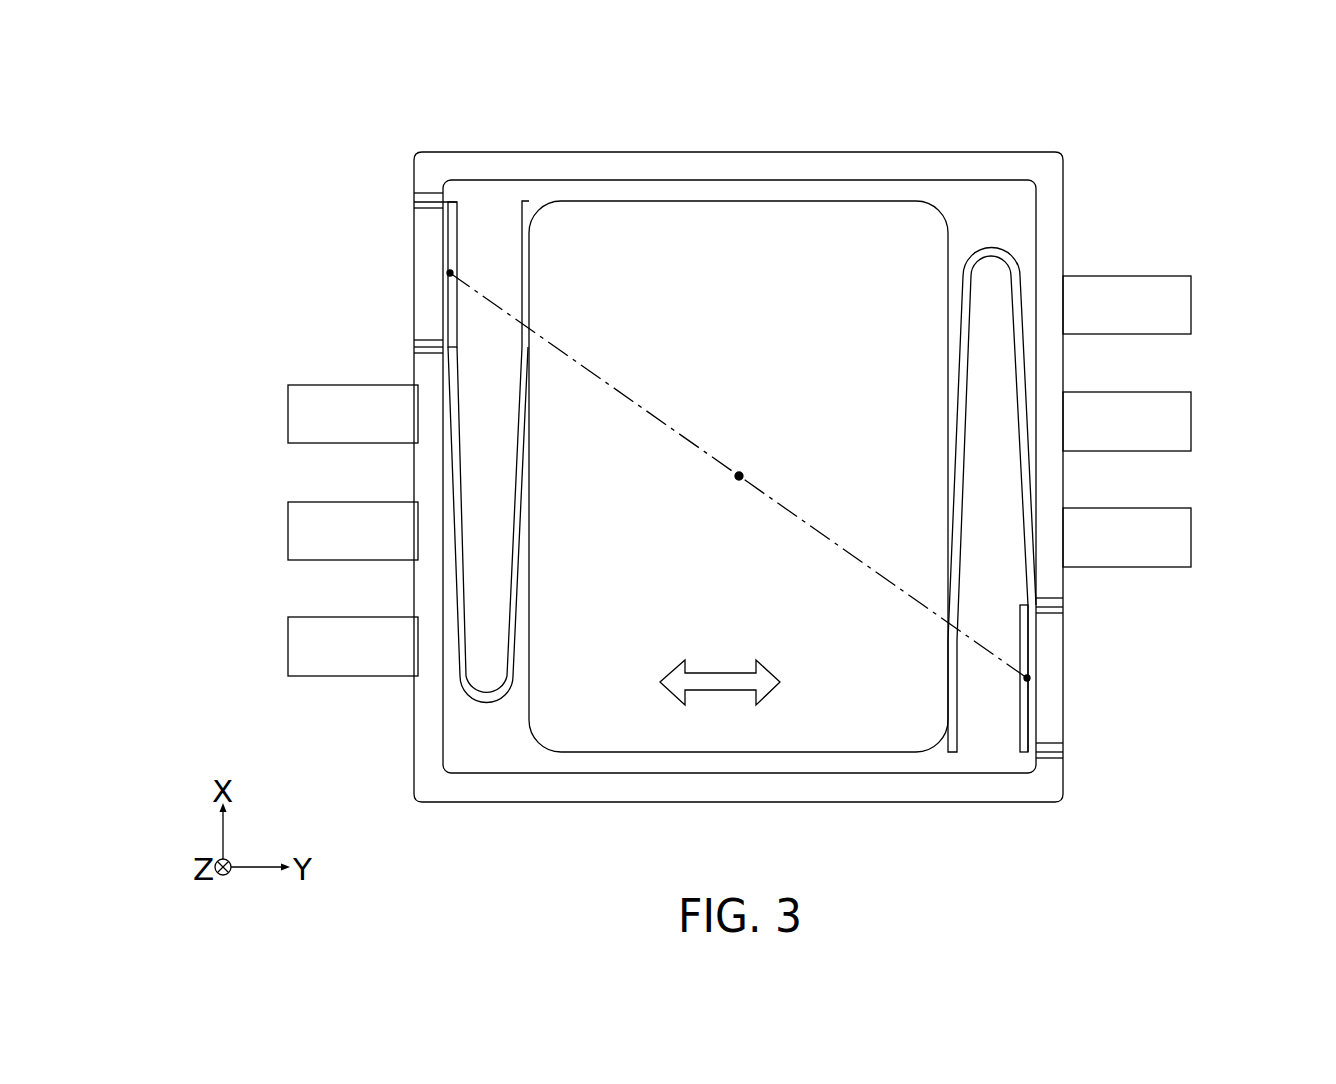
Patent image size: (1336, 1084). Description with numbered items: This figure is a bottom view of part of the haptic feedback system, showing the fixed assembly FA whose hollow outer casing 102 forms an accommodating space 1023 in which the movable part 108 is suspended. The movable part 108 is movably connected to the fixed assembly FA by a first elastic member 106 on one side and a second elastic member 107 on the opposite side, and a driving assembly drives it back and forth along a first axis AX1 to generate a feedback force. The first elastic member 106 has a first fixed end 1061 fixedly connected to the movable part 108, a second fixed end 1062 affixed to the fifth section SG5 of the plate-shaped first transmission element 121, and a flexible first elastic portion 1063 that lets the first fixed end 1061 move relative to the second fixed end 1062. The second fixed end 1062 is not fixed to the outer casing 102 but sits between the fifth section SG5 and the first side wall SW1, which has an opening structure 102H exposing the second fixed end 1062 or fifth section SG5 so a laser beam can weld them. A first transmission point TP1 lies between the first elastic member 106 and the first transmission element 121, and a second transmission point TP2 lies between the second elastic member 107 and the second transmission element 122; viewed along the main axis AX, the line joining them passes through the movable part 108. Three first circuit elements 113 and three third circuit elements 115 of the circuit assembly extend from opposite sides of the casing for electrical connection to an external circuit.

The outer casing 102 is at (768, 431).
The fixed assembly FA is at (1070, 95).
The first side wall SW1 is at (427, 372).
The accommodating space 1023 is at (970, 215).
The opening structure 102H is at (427, 338).
The movable part 108 is at (836, 223).
The first elastic member 106 is at (348, 462).
The first fixed end 1061 is at (526, 243).
The second fixed end 1062 is at (447, 232).
The first elastic portion 1063 is at (486, 703).
The fifth section SG5 is at (441, 205).
The first transmission element 121 is at (441, 205).
The second elastic member 107 is at (1020, 255).
The second transmission element 122 is at (1023, 707).
The first circuit element 113 is at (275, 416).
The third circuit element 115 is at (1198, 304).
The main axis AX is at (738, 475).
The first axis AX1 is at (752, 682).
The first transmission point TP1 is at (447, 273).
The second transmission point TP2 is at (1030, 678).